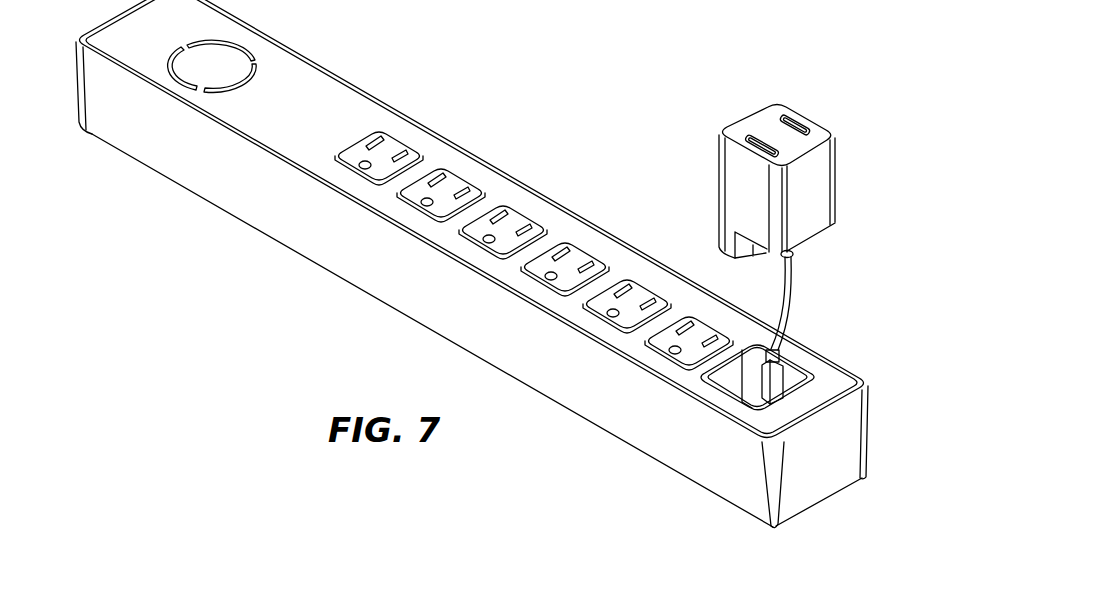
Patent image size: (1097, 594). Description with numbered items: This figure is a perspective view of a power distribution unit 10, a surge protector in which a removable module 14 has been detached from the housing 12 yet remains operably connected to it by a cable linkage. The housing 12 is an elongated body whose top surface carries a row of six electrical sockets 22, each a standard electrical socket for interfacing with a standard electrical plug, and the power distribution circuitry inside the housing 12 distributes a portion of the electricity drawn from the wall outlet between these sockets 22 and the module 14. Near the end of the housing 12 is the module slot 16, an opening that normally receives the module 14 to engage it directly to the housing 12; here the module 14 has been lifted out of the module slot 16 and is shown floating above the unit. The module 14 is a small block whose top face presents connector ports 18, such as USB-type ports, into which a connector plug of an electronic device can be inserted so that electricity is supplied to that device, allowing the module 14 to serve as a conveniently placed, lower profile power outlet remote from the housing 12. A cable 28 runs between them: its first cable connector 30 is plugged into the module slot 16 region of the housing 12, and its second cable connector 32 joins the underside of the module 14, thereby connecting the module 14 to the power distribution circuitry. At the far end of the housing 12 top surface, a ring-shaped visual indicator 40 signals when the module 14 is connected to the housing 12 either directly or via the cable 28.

The power distribution unit 10 is at (503, 83).
The housing 12 is at (257, 229).
The module 14 is at (792, 167).
The module slot 16 is at (807, 393).
The connector port 18 is at (755, 138).
The electrical socket 22 is at (455, 175).
The cable 28 is at (789, 288).
The first cable connector 30 is at (780, 350).
The second cable connector 32 is at (791, 256).
The visual indicator 40 is at (233, 40).